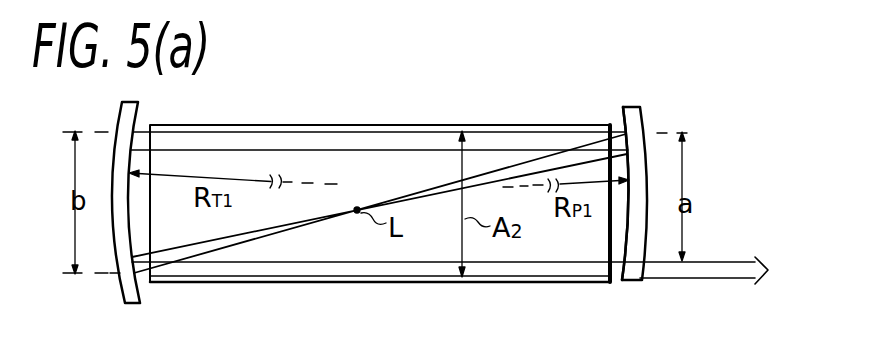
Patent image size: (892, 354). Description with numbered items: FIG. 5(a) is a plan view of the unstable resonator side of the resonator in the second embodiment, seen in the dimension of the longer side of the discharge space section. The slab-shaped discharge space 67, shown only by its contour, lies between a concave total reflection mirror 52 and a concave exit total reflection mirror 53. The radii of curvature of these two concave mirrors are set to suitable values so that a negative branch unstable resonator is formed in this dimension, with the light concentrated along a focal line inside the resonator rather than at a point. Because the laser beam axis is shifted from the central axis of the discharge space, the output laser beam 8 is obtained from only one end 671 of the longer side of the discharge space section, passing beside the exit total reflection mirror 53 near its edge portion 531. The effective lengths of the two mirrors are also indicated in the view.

The total reflection mirror 52 is at (116, 109).
The exit total reflection mirror 53 is at (632, 126).
The discharge space 67 is at (407, 163).
The end of the longer side of the discharge space section 671 is at (612, 276).
The reflecting surface of output mirror 531 is at (632, 278).
The laser beam 8 is at (733, 278).